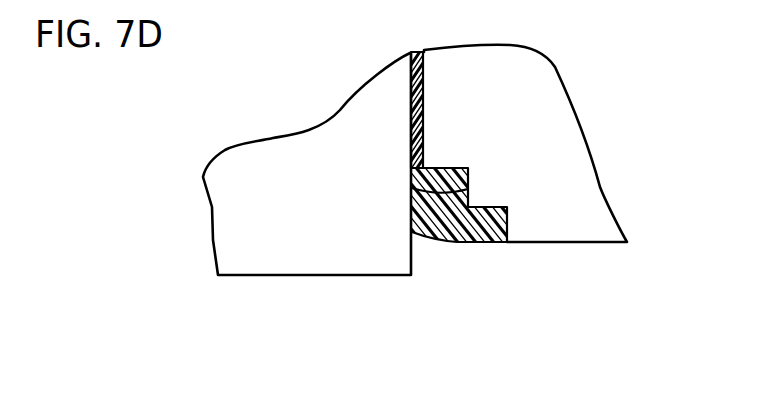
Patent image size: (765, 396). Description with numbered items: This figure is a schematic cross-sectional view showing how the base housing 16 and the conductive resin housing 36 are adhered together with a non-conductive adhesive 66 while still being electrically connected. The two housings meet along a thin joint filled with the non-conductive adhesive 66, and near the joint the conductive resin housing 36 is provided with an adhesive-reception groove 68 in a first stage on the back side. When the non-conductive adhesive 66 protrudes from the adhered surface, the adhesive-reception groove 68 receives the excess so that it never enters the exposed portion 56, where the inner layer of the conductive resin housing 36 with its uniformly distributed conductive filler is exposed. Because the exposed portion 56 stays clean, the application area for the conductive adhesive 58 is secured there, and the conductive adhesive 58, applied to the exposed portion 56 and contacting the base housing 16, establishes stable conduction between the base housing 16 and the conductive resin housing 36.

The base housing 16 is at (277, 160).
The conductive resin housing 36 is at (557, 128).
The non-conductive adhesive 66 is at (415, 72).
The adhesive-reception groove 68 is at (411, 183).
The conductive adhesive 58 is at (447, 233).
The exposed portion 56 is at (495, 233).